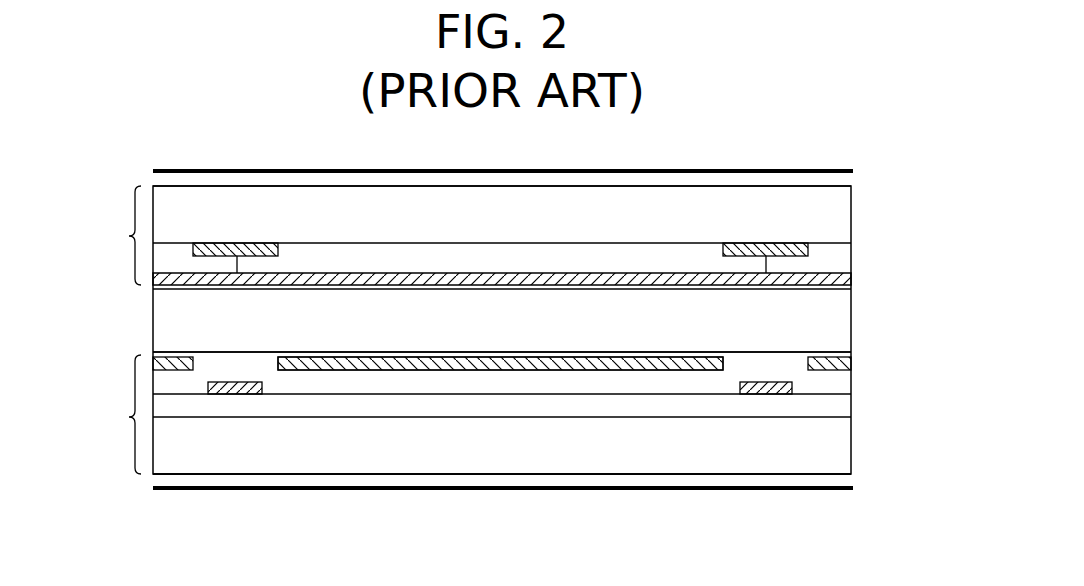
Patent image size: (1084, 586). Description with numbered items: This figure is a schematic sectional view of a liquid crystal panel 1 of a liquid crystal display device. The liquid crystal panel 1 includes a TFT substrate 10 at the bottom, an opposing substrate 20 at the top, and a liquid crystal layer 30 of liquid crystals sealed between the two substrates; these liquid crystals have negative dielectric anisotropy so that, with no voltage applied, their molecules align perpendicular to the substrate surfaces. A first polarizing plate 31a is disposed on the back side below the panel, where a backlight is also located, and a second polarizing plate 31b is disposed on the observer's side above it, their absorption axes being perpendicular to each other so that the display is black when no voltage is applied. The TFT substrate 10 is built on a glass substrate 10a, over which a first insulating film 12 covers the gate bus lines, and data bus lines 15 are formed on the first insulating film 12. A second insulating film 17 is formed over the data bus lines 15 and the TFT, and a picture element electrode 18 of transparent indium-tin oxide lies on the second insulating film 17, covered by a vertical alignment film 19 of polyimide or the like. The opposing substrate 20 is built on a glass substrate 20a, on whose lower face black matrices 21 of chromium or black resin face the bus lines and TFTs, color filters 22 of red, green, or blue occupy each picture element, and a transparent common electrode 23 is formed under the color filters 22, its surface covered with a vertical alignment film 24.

The liquid crystal panel 1 is at (140, 178).
The TFT substrate 10 is at (473, 414).
The glass substrate 10a is at (840, 441).
The first insulating film 12 is at (838, 404).
The data bus lines 15 is at (236, 396).
The second insulating film 17 is at (837, 383).
The picture element electrode 18 is at (622, 364).
The vertical alignment film 19 is at (763, 357).
The opposing substrate 20 is at (473, 235).
The glass substrate 20a is at (843, 219).
The black matrices 21 is at (237, 243).
The color filters 22 is at (369, 257).
The common electrode 23 is at (522, 286).
The vertical alignment film 24 is at (300, 291).
The liquid crystal layer 30 is at (162, 329).
The first polarizing plate 31a is at (239, 492).
The second polarizing plate 31b is at (213, 169).